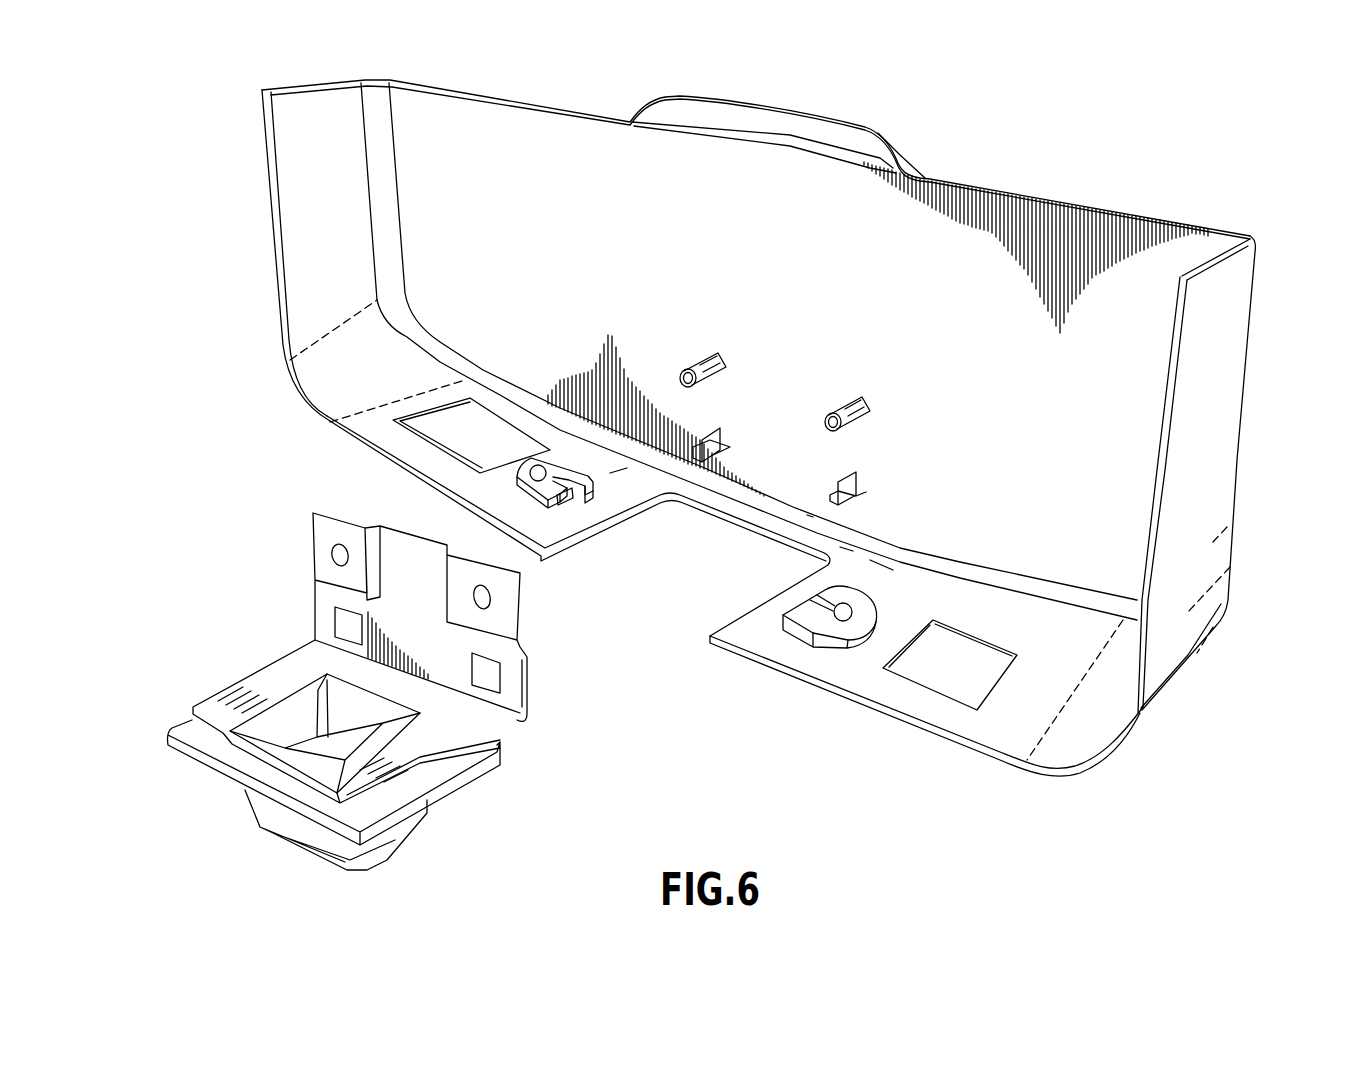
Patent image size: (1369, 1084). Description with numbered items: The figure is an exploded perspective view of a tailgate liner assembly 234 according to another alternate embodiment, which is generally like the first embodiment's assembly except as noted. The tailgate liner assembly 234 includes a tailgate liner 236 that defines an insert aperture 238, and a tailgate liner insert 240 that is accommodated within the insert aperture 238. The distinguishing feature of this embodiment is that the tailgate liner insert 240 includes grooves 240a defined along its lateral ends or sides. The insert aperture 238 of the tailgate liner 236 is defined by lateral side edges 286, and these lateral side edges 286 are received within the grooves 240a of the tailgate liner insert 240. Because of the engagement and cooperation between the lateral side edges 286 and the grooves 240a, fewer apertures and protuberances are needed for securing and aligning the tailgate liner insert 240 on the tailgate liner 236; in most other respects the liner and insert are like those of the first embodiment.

The tailgate liner assembly 234 is at (172, 80).
The tailgate liner 236 is at (1250, 494).
The insert aperture 238 is at (648, 603).
The tailgate liner insert 240 is at (538, 735).
The grooves 240a is at (202, 723).
The lateral side edges 286 is at (587, 532).